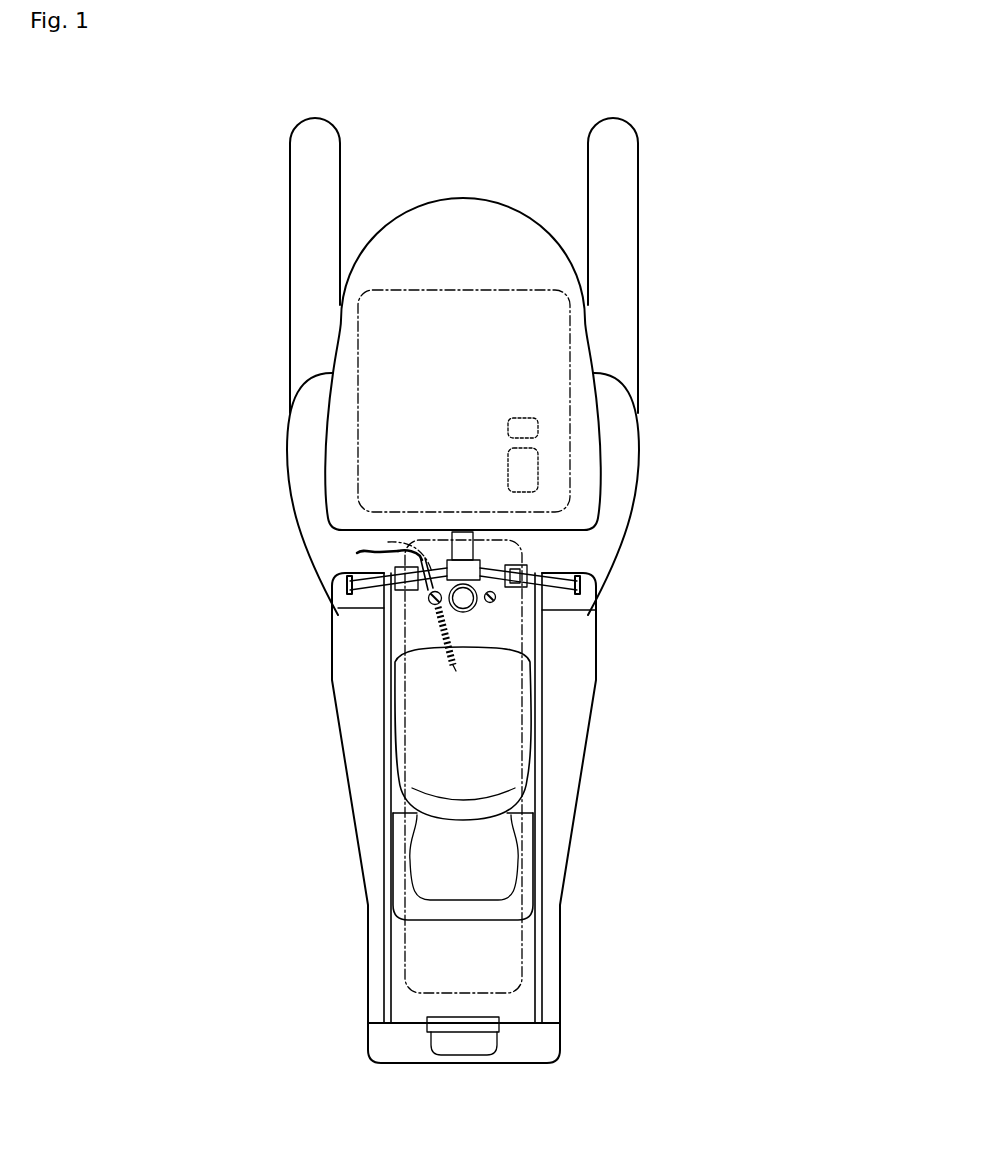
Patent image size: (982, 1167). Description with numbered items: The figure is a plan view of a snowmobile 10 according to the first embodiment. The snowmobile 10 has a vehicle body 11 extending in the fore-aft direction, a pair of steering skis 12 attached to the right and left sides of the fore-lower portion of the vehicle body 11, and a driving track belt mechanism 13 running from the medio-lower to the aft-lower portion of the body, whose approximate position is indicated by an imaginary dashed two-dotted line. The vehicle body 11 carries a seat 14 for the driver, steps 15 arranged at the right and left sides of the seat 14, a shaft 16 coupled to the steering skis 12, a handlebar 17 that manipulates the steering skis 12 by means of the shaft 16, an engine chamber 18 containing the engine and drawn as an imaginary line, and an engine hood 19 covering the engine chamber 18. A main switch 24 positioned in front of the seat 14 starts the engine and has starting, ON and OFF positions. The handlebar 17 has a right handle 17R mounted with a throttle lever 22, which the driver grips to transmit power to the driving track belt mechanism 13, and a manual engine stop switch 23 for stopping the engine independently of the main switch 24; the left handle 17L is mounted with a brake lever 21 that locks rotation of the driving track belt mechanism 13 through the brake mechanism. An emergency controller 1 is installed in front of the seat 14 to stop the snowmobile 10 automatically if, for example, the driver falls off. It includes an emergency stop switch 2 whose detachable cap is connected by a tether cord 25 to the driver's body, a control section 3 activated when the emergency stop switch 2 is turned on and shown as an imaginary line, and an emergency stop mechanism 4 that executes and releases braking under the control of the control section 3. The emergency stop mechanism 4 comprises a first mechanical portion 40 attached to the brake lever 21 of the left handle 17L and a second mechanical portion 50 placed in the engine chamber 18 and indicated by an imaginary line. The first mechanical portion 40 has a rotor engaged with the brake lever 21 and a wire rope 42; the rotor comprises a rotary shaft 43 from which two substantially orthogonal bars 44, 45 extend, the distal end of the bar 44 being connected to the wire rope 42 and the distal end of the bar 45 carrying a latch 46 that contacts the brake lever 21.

The emergency controller 1 is at (140, 215).
The emergency stop switch 2 is at (425, 610).
The control section 3 is at (518, 415).
The emergency stop mechanism 4 is at (187, 307).
The snowmobile 10 is at (668, 258).
The vehicle body 11 is at (598, 791).
The steering skis 12 is at (322, 138).
The driving track belt mechanism 13 is at (522, 965).
The seat 14 is at (448, 757).
The steps 15 is at (360, 731).
The shaft 16 is at (465, 545).
The handlebar 17 is at (488, 566).
The left handle 17L is at (348, 587).
The right handle 17R is at (579, 588).
The engine chamber 18 is at (570, 465).
The engine hood 19 is at (471, 222).
The brake lever 21 is at (396, 566).
The throttle lever 22 is at (478, 600).
The manual engine stop switch 23 is at (528, 572).
The main switch 24 is at (494, 604).
The tether cord 25 is at (442, 623).
The first mechanical portion 40 is at (312, 527).
The wire rope 42 is at (431, 594).
The rotary shaft 43 is at (403, 545).
The bar 44 is at (410, 594).
The bar 45 is at (380, 548).
The latch 46 is at (368, 549).
The second mechanical portion 50 is at (507, 465).